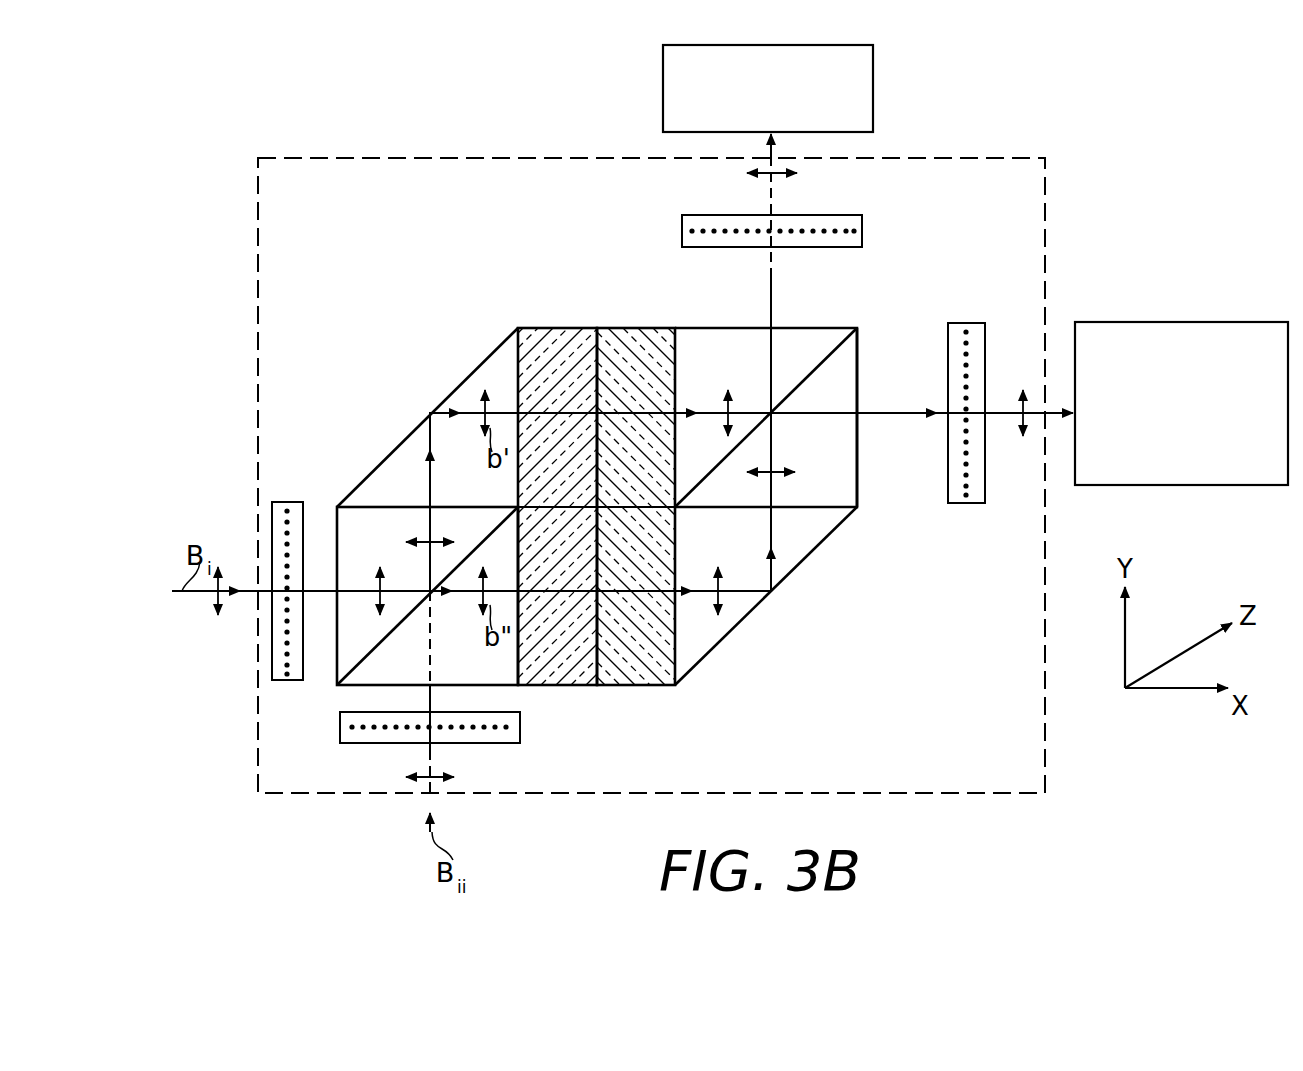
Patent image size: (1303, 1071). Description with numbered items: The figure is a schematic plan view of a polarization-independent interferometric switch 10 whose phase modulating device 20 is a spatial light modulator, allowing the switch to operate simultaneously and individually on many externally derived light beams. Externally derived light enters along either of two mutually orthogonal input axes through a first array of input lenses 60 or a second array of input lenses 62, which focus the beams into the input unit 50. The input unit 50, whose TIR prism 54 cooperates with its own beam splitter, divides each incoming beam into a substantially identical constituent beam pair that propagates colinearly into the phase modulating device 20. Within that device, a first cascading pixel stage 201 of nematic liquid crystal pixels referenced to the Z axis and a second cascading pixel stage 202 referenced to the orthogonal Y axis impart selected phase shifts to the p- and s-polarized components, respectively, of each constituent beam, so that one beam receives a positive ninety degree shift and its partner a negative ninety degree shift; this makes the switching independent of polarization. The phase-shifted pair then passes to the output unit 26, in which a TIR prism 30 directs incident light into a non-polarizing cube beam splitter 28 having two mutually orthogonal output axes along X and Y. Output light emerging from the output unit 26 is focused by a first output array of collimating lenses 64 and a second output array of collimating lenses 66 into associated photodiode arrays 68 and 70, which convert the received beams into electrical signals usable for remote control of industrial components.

The interferometric switch 10 is at (398, 158).
The phase-modulating device 20 is at (598, 453).
The cascading pixel stage 201 is at (597, 322).
The cascading pixel stage 202 is at (637, 479).
The output unit 26 is at (812, 570).
The cube beam splitter 28 is at (847, 452).
The total internal reflection prism 30 is at (830, 518).
The input unit 50 is at (404, 417).
The TIR prism 54 is at (484, 362).
The first array of input lenses 60 is at (273, 653).
The second array of input lenses 62 is at (341, 731).
The first output array of collimating lenses 64 is at (860, 240).
The second output array of collimating lenses 66 is at (976, 473).
The photodiode array 68 is at (873, 103).
The photodiode array 70 is at (1161, 322).